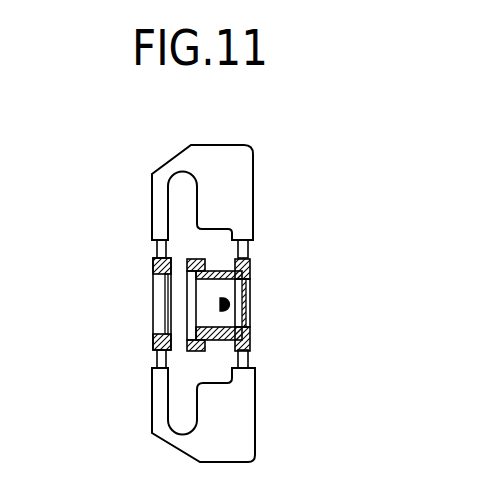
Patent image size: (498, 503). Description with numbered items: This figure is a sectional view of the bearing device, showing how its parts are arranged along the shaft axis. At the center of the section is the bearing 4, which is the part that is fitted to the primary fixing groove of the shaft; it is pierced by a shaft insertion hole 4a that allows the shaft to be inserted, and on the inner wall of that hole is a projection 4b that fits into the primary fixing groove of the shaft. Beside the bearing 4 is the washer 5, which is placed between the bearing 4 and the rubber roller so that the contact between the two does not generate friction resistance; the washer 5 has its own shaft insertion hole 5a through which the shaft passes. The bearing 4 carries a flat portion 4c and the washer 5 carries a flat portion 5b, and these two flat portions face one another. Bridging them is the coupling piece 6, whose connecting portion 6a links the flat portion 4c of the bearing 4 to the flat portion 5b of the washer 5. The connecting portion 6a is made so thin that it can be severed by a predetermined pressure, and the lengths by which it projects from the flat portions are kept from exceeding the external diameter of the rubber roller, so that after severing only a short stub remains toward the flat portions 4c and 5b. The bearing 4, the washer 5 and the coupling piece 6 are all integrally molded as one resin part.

The bearing 4 is at (269, 282).
The shaft insertion hole 4a is at (250, 320).
The projection 4b is at (226, 297).
The flat portion 4c is at (247, 262).
The washer 5 is at (127, 286).
The shaft insertion hole 5a is at (160, 322).
The flat portion 5b is at (153, 258).
The coupling piece 6 is at (245, 153).
The connecting portion 6a is at (157, 248).